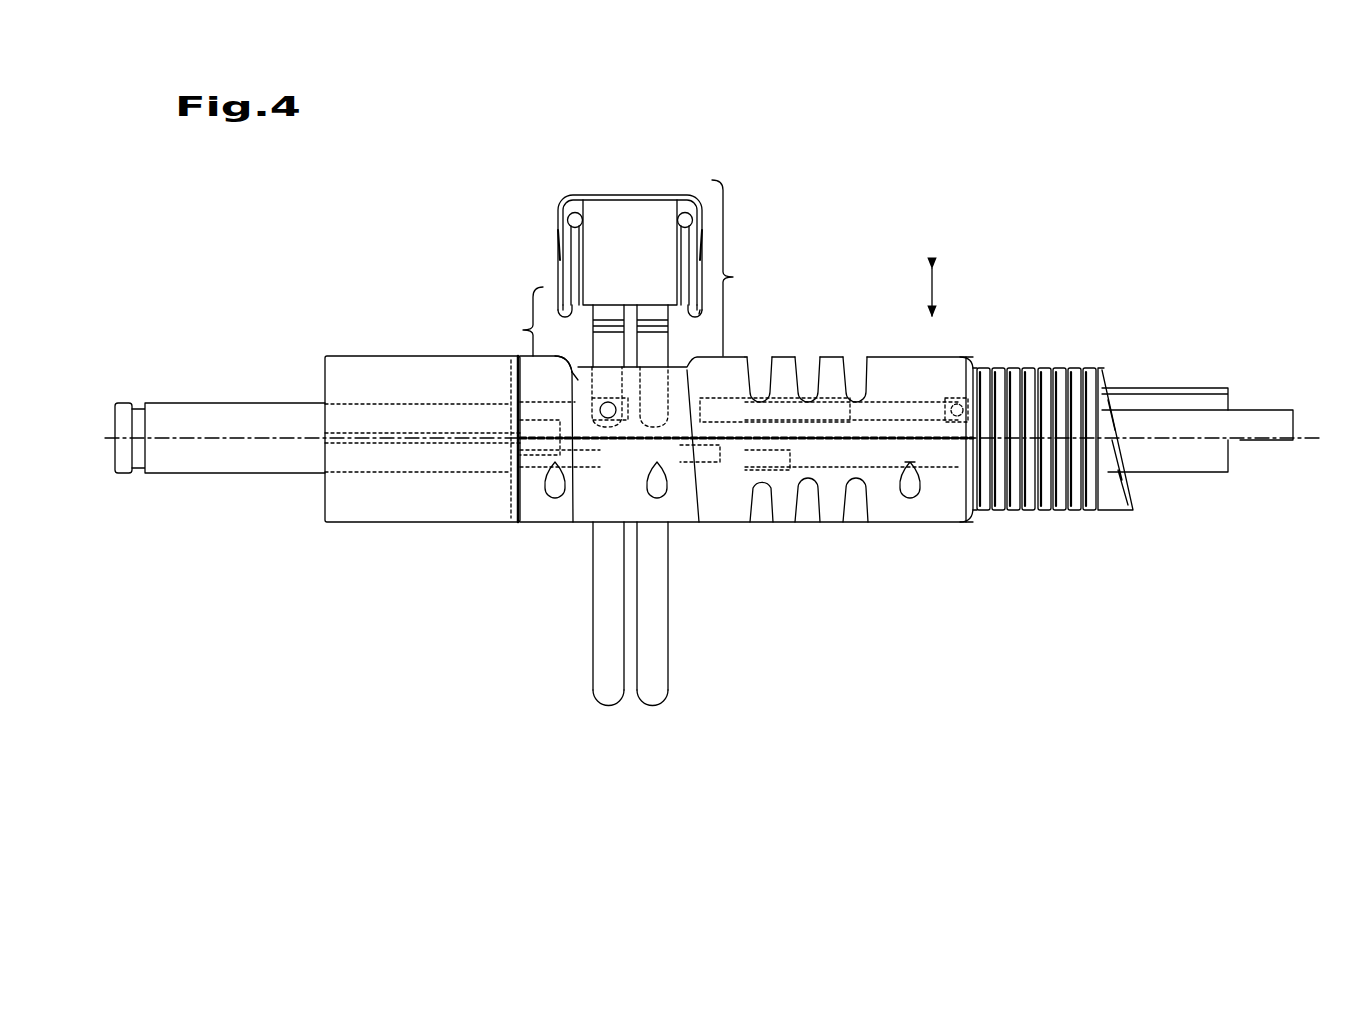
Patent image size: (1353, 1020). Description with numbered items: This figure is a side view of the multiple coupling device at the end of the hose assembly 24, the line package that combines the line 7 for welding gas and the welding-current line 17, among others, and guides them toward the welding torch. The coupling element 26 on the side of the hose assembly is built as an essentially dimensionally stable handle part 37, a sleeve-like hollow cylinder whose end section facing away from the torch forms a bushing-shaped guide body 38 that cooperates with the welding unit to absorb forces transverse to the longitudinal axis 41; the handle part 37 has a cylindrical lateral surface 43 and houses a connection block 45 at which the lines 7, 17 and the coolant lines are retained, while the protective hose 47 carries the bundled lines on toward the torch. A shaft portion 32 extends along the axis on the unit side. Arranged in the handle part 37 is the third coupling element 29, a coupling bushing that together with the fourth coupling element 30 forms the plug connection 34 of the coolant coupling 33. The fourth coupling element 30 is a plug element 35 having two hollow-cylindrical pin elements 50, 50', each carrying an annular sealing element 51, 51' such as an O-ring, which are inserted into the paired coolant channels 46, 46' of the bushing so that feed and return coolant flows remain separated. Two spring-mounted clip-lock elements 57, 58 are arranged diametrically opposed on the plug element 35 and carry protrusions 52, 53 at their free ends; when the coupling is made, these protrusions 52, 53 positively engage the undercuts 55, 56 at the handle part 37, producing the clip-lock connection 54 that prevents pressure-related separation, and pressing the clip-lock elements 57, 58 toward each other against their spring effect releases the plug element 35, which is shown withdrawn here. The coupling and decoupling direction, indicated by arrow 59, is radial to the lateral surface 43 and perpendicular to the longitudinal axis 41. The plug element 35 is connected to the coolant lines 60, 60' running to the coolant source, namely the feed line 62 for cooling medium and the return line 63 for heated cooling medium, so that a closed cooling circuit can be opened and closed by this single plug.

The line 7 is at (1257, 417).
The welding-current line 17 is at (1127, 390).
The hose assembly 24 is at (974, 271).
The coupling element on the side of the hose assembly 26 is at (296, 272).
The third coupling element 29 is at (572, 376).
The fourth coupling element 30 is at (569, 179).
The shaft 32 is at (215, 458).
The coolant coupling 33 is at (461, 228).
The plug connection 34 is at (749, 274).
The plug element 35 is at (627, 213).
The handle part 37 is at (918, 510).
The guide body 38 is at (370, 503).
The longitudinal axis 41 is at (244, 434).
The lateral surface 43 is at (950, 483).
The connection block 45 is at (541, 495).
The coolant channel 46 is at (591, 517).
The coolant channel 46' is at (680, 536).
The protective hose 47 is at (1027, 507).
The hollow-cylindrical pin element 50 is at (553, 295).
The hollow-cylindrical pin element 50' is at (725, 336).
The annular sealing element 51 is at (590, 227).
The annular sealing element 51' is at (670, 229).
The protrusion 52 is at (565, 352).
The protrusion 53 is at (699, 312).
The clip-lock connection 54 is at (508, 327).
The undercut 55 is at (573, 522).
The undercut 56 is at (699, 522).
The clip-lock element 57 is at (549, 228).
The clip-lock element 58 is at (711, 238).
The arrow 59 is at (928, 295).
The coolant line 60 is at (563, 627).
The coolant line 60' is at (703, 610).
The feed line 62 is at (605, 692).
The return line 63 is at (655, 692).